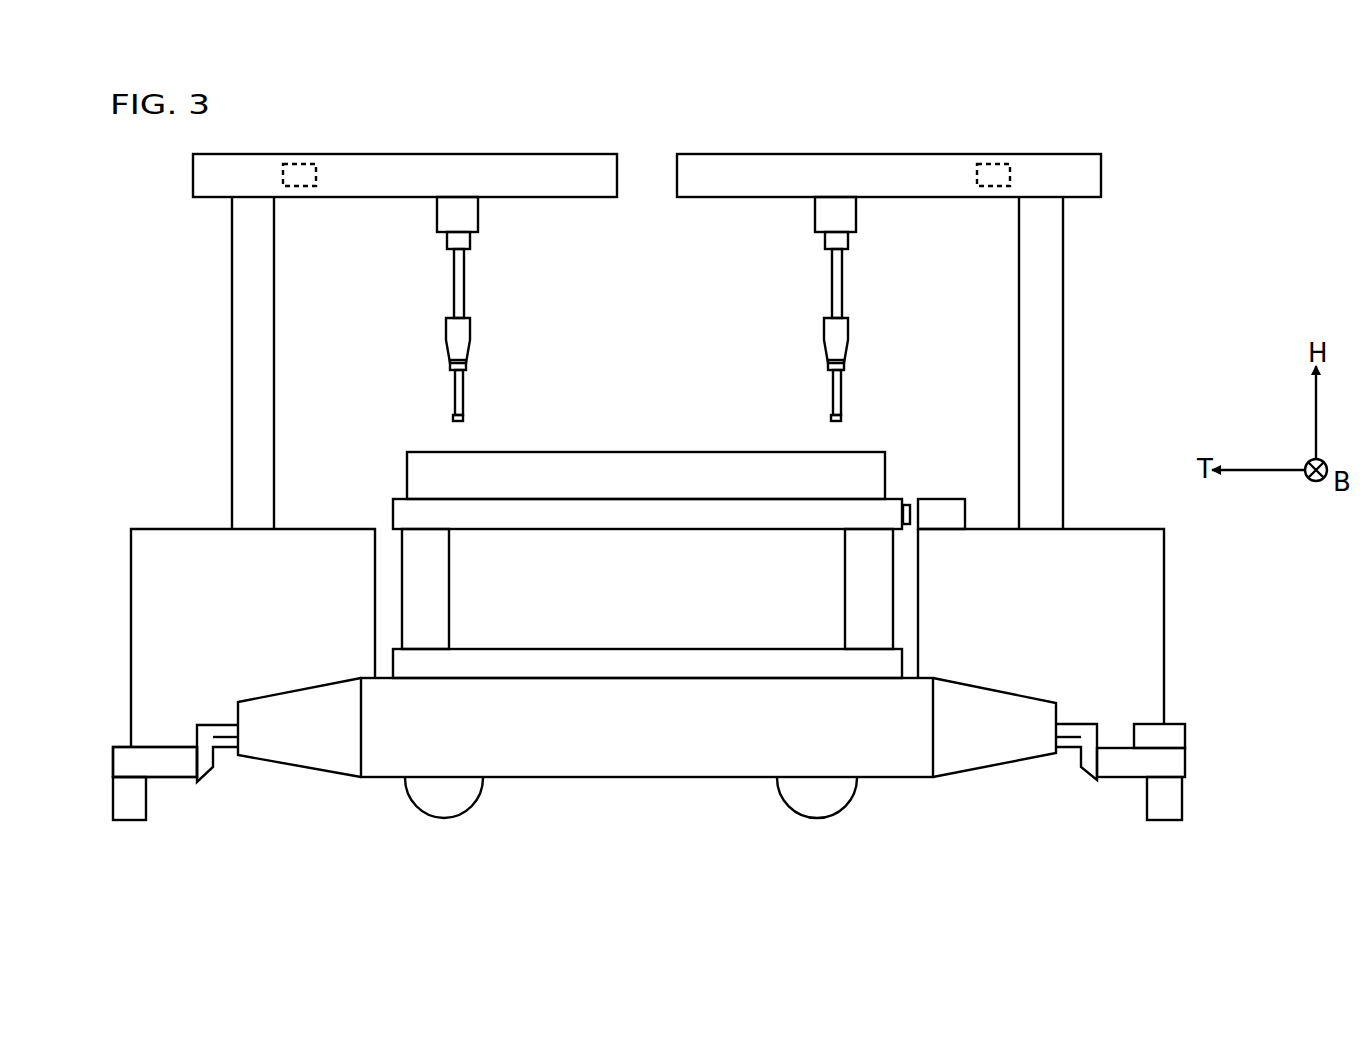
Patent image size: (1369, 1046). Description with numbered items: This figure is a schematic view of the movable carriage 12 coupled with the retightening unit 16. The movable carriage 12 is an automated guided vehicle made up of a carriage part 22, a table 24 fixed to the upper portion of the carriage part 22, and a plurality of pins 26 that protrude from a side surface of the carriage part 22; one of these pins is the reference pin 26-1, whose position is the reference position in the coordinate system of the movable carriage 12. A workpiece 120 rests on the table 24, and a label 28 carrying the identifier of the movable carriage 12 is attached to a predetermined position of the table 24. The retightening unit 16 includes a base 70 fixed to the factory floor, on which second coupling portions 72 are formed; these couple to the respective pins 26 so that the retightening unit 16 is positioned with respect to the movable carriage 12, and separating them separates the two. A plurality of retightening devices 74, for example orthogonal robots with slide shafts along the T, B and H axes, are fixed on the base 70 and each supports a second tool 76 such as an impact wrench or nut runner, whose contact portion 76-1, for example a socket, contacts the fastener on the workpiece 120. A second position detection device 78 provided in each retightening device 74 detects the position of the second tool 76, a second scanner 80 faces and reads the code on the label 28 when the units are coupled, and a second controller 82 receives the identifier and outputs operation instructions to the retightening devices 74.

The movable carriage 12 is at (647, 763).
The retightening unit 16 is at (507, 142).
The carriage part 22 is at (539, 760).
The table 24 is at (392, 513).
The pins 26 is at (643, 714).
The reference pin 26-1 is at (209, 722).
The label 28 is at (907, 505).
The base 70 is at (113, 761).
The second coupling portions 72 is at (196, 742).
The retightening device 74 is at (227, 293).
The second tool 76 is at (471, 327).
The contact portion 76-1 is at (464, 419).
The second position detection device 78 is at (299, 163).
The second scanner 80 is at (942, 499).
The second controller 82 is at (1178, 737).
The workpiece 120 is at (604, 452).